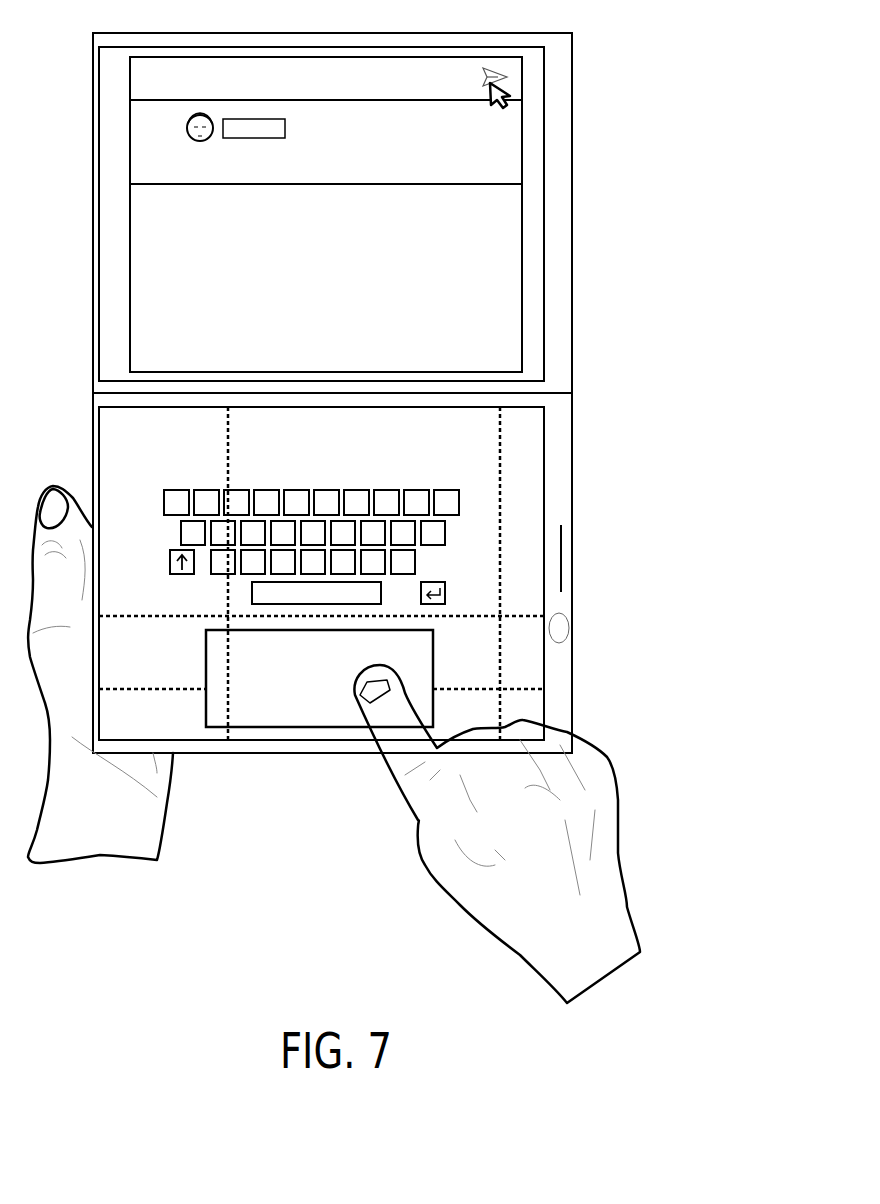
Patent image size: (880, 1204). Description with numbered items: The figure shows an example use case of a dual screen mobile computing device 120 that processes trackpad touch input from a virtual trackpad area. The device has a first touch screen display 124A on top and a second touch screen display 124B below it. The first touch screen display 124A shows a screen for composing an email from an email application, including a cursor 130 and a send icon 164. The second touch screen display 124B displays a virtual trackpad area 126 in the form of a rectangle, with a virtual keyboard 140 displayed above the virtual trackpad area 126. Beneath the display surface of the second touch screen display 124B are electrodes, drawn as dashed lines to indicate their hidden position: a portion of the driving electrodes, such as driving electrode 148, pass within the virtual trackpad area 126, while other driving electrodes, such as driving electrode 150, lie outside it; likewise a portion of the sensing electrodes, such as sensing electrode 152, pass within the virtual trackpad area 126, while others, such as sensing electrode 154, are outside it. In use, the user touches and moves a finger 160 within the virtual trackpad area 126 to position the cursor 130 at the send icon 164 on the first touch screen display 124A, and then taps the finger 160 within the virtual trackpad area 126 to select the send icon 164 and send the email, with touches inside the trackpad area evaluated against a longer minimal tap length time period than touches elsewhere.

The dual screen mobile computing device 120 is at (652, 57).
The first touch screen display 124A is at (93, 140).
The second touch screen display 124B is at (93, 452).
The virtual trackpad area 126 is at (206, 665).
The cursor 130 is at (494, 96).
The virtual keyboard 140 is at (167, 480).
The driving electrode 148 is at (143, 690).
The driving electrode 150 is at (167, 616).
The sensing electrode 152 is at (230, 427).
The sensing electrode 154 is at (500, 645).
The finger 160 is at (362, 712).
The send icon 164 is at (492, 72).